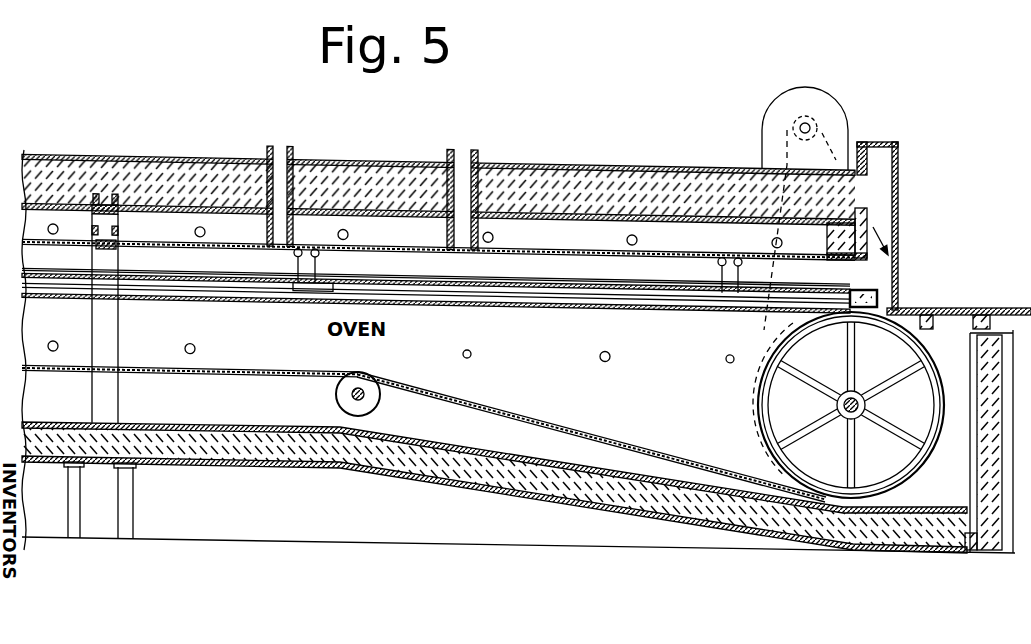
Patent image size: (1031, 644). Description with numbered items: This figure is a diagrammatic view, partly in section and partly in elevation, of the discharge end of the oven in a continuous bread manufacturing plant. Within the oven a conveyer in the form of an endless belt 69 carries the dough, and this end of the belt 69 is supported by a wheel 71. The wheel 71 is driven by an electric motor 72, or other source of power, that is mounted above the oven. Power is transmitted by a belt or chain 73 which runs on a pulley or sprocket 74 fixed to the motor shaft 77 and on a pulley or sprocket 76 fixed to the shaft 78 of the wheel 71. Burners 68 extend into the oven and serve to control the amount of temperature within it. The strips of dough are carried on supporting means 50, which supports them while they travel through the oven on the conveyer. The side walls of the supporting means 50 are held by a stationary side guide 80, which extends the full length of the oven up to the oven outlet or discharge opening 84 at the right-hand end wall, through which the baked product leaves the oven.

The supporting means 50 is at (866, 294).
The burners 68 is at (471, 352).
The endless belt 69 is at (585, 431).
The wheel 71 is at (762, 398).
The electric motor 72 is at (828, 113).
The belt or chain 73 is at (907, 298).
The pulley or sprocket 74 is at (792, 141).
The pulley or sprocket 76 is at (768, 336).
The motor shaft 77 is at (799, 124).
The shaft 78 is at (868, 403).
The stationary side guide 80 is at (666, 300).
The oven outlet or discharge opening 84 is at (897, 273).